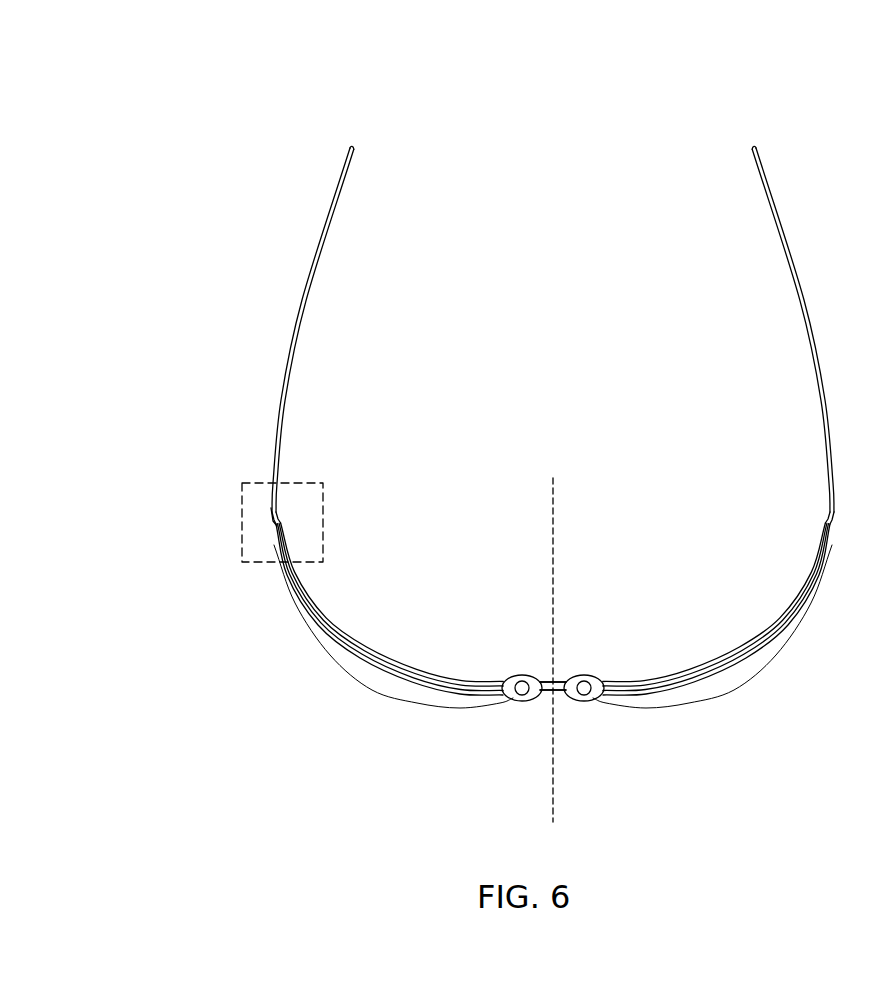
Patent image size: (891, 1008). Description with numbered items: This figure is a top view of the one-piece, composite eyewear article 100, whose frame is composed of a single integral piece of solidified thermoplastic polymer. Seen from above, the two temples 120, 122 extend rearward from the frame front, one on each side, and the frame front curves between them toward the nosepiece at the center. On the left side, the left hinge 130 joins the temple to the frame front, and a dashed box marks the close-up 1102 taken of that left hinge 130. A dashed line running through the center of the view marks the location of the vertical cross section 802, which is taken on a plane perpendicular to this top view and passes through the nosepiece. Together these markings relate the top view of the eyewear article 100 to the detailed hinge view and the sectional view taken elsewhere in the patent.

The one-piece, composite eyewear article 100 is at (214, 80).
The temple 120 is at (352, 131).
The temple 122 is at (797, 244).
The left hinge 130 is at (273, 522).
The close-up 1102 is at (303, 470).
The vertical cross section 802 is at (557, 470).